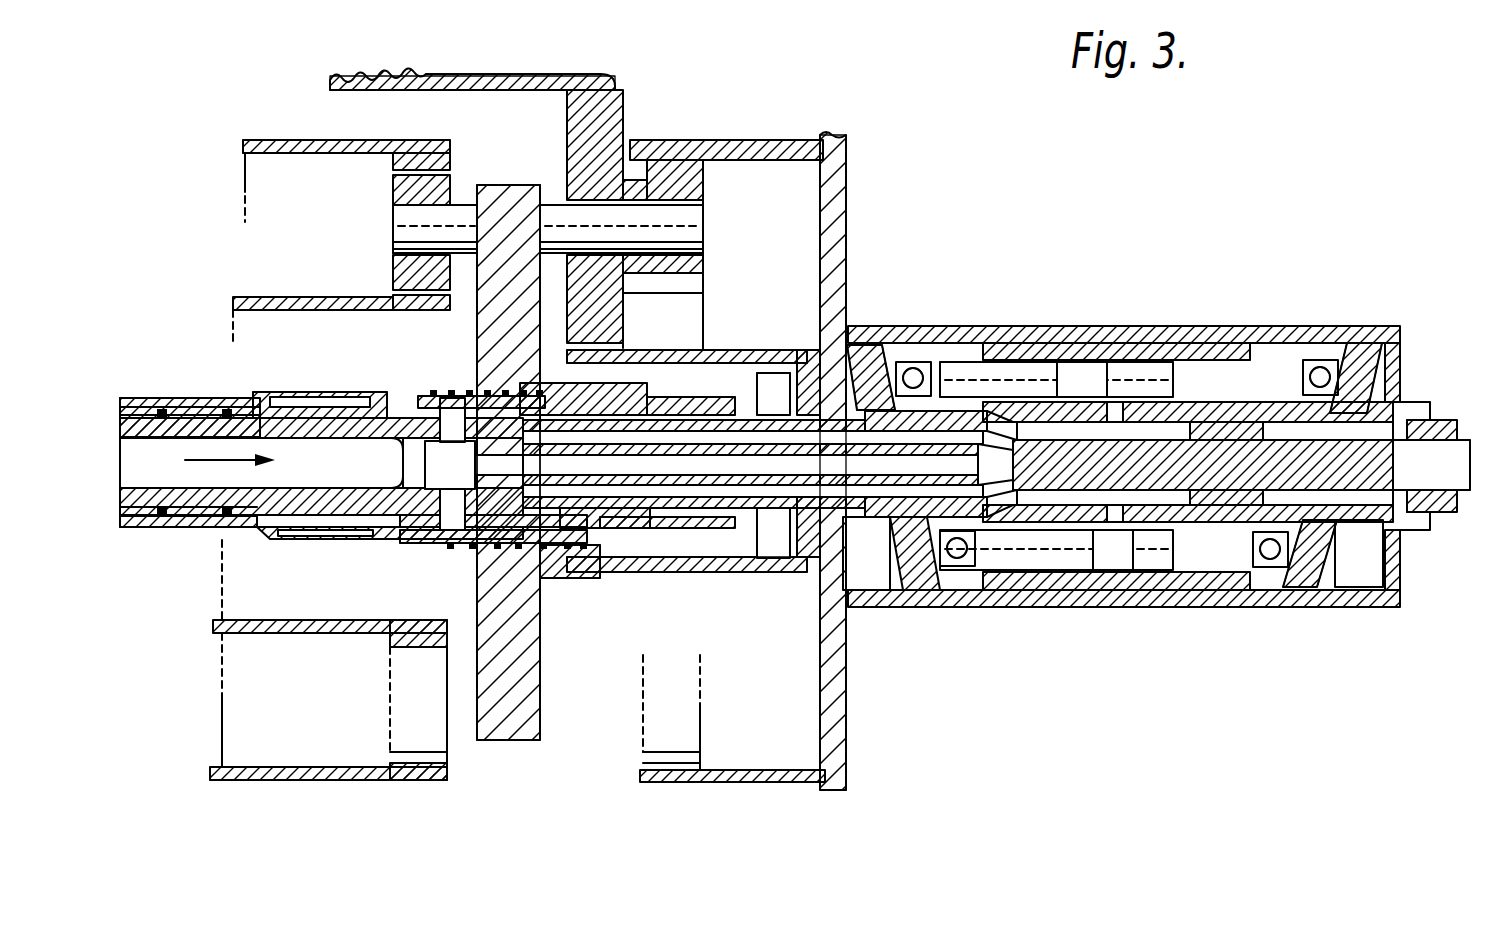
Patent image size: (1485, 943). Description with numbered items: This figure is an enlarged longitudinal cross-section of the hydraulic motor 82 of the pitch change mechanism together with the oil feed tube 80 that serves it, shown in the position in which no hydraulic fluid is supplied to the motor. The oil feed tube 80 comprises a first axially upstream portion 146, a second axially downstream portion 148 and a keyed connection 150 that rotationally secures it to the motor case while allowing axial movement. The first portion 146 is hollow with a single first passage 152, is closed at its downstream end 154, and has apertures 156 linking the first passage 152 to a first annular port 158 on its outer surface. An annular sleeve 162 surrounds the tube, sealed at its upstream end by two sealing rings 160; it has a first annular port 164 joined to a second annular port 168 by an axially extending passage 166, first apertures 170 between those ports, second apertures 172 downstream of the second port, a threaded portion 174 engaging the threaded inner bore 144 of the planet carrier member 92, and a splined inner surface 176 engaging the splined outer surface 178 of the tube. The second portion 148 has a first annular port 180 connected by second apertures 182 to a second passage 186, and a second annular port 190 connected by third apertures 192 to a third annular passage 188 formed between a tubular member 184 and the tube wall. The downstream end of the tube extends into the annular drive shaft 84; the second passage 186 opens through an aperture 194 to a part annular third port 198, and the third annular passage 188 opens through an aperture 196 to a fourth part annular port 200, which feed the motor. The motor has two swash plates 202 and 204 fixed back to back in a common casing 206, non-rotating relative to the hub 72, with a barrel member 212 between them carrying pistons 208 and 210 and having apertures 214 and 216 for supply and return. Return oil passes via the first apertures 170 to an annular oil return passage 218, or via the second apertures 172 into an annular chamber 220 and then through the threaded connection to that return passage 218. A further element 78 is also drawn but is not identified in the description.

The housing wall 78 is at (540, 80).
The hub 72 is at (833, 185).
The hydraulic motor 82 is at (1362, 326).
The swash plate 204 is at (1380, 352).
The keyed connection 150 is at (1440, 460).
The swash plate 202 is at (858, 352).
The pistons 208 is at (928, 362).
The aperture 196 is at (1000, 432).
The barrel member 212 is at (1085, 362).
The apertures 216 is at (1120, 380).
The fourth part annular port 200 is at (1190, 345).
The pistons 210 is at (1270, 362).
The splined outer surface 178 is at (690, 410).
The annular drive shaft 84 is at (745, 352).
The first apertures 170 is at (395, 385).
The sealing rings 160 is at (178, 400).
The apertures 156 is at (250, 405).
The first annular port 158 is at (290, 425).
The first passage 152 is at (342, 462).
The closed downstream end 154 is at (392, 448).
The second apertures 182 is at (450, 395).
The oil feed tube 80 is at (135, 520).
The first axially upstream portion 146 is at (185, 505).
The annular sleeve 162 is at (200, 527).
The first annular port 164 is at (280, 541).
The annular oil return passage 218 is at (290, 605).
The axially extending passage 166 is at (412, 530).
The first annular port 180 is at (445, 528).
The threaded portion 174 is at (520, 522).
The second annular port 168 is at (440, 548).
The threaded inner bore 144 is at (535, 548).
The second annular port 190 is at (560, 560).
The third apertures 192 is at (567, 540).
The second apertures 172 is at (640, 540).
The tubular member 184 is at (690, 520).
The splined inner surface 176 is at (700, 487).
The third annular passage 188 is at (775, 520).
The annular chamber 220 is at (745, 477).
The second passage 186 is at (875, 477).
The second axially downstream portion 148 is at (853, 519).
The aperture 194 is at (1000, 540).
The aperture 214 is at (1115, 545).
The part annular third port 198 is at (1130, 505).
The casing 206 is at (1300, 605).
The planet carrier member 92 is at (522, 740).